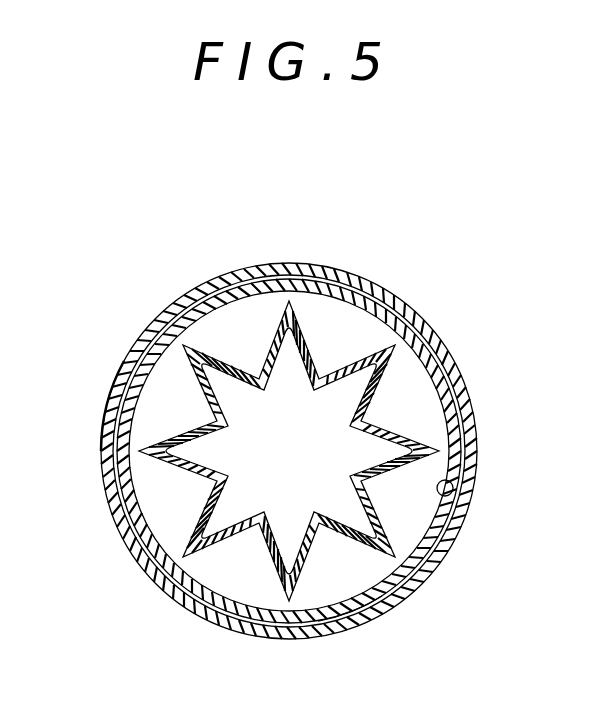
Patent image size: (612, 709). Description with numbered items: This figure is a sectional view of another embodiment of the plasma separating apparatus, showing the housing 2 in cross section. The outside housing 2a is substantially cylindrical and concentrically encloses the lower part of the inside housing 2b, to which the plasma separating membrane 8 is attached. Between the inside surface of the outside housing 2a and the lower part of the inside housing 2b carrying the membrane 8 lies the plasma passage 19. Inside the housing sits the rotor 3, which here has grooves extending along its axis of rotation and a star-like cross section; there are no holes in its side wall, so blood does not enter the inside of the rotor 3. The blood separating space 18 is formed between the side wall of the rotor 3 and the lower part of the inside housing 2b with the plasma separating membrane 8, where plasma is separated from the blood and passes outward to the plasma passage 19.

The housing 2 is at (294, 458).
The outside housing 2a is at (408, 307).
The inside housing 2b is at (450, 418).
The rotor 3 is at (307, 320).
The plasma separating membrane 8 is at (453, 489).
The blood separating space 18 is at (333, 558).
The plasma passage 19 is at (115, 471).